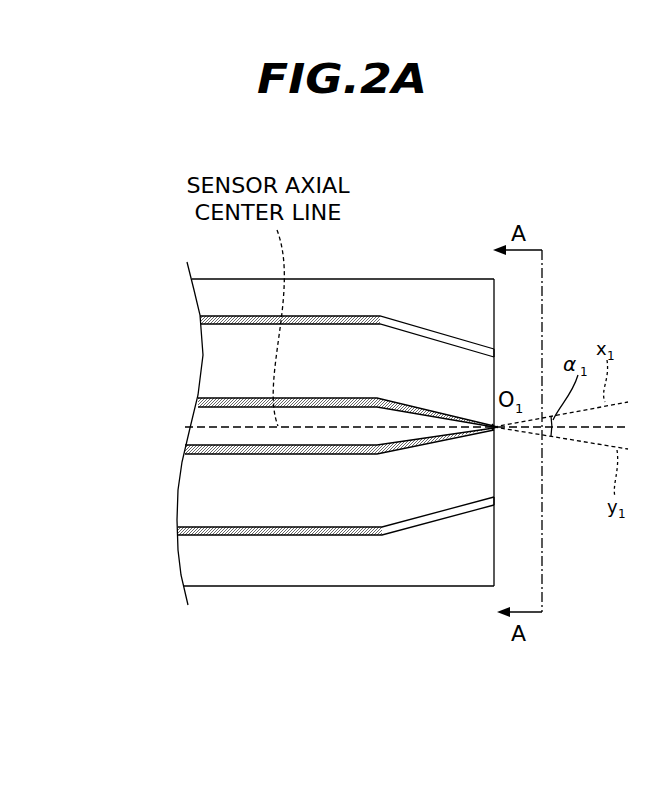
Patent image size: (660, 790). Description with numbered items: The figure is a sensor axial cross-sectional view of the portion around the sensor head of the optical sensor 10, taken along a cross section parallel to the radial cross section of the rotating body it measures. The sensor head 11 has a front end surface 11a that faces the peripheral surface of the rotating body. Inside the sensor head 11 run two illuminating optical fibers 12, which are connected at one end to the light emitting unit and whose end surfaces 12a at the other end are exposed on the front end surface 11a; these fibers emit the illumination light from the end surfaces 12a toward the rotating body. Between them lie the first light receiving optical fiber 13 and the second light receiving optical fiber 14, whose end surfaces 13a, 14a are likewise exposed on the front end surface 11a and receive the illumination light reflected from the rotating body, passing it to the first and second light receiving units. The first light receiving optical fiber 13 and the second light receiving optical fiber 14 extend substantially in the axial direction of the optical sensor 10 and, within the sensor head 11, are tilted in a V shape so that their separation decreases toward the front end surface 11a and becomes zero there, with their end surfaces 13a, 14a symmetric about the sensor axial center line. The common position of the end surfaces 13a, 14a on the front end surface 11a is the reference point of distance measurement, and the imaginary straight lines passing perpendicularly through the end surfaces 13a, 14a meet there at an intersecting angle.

The gas sensor element 10 is at (240, 683).
The element body 11 is at (407, 255).
The front end face of element body 11a is at (494, 350).
The outer gas passages 12 is at (227, 320).
The openings of outer gas passages 12a is at (494, 350).
The upper inner gas passage 13 is at (227, 398).
The opening of upper inner gas passage 13a is at (496, 425).
The lower inner gas passage 14 is at (227, 452).
The opening of lower inner gas passage 14a is at (496, 430).